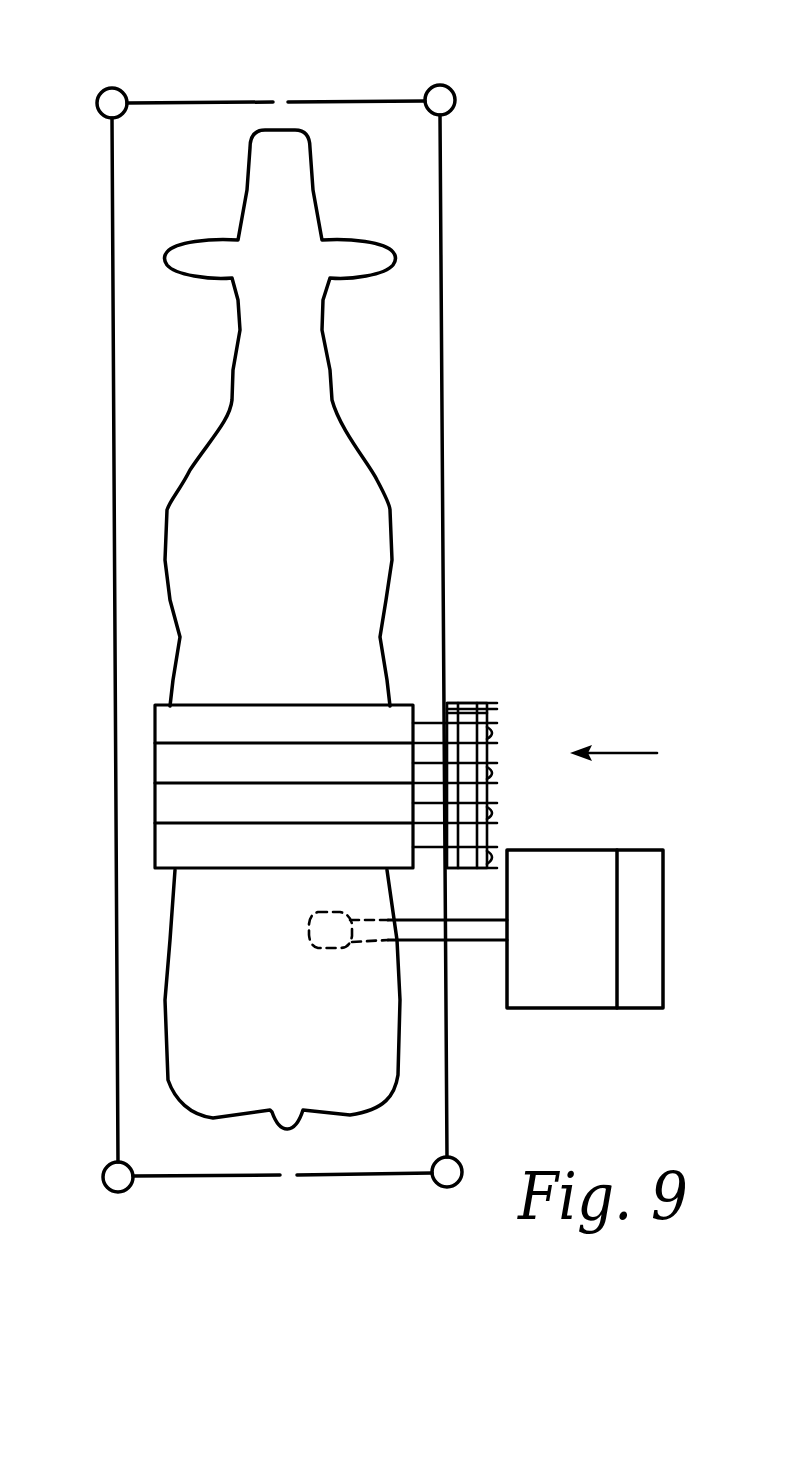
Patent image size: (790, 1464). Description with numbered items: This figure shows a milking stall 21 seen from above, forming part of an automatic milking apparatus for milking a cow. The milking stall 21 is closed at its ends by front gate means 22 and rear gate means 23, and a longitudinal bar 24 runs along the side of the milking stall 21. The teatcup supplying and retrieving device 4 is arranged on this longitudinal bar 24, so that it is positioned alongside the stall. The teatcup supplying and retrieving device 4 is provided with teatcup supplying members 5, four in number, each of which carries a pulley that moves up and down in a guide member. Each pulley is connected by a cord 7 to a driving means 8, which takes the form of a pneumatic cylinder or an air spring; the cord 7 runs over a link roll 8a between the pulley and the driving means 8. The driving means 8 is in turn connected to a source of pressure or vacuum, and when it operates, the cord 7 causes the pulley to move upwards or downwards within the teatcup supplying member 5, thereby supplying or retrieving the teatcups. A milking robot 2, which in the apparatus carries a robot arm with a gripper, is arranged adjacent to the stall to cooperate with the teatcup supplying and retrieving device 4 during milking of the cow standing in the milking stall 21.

The milking robot 2 is at (640, 898).
The teatcup supplying and retrieving device 4 is at (635, 754).
The teatcup supplying member 5 is at (490, 703).
The cord 7 is at (420, 717).
The driving means 8 is at (210, 704).
The link roll 8a is at (465, 703).
The milking stall 21 is at (399, 181).
The front gate means 22 is at (347, 102).
The rear gate means 23 is at (200, 1180).
The longitudinal bar 24 is at (442, 382).